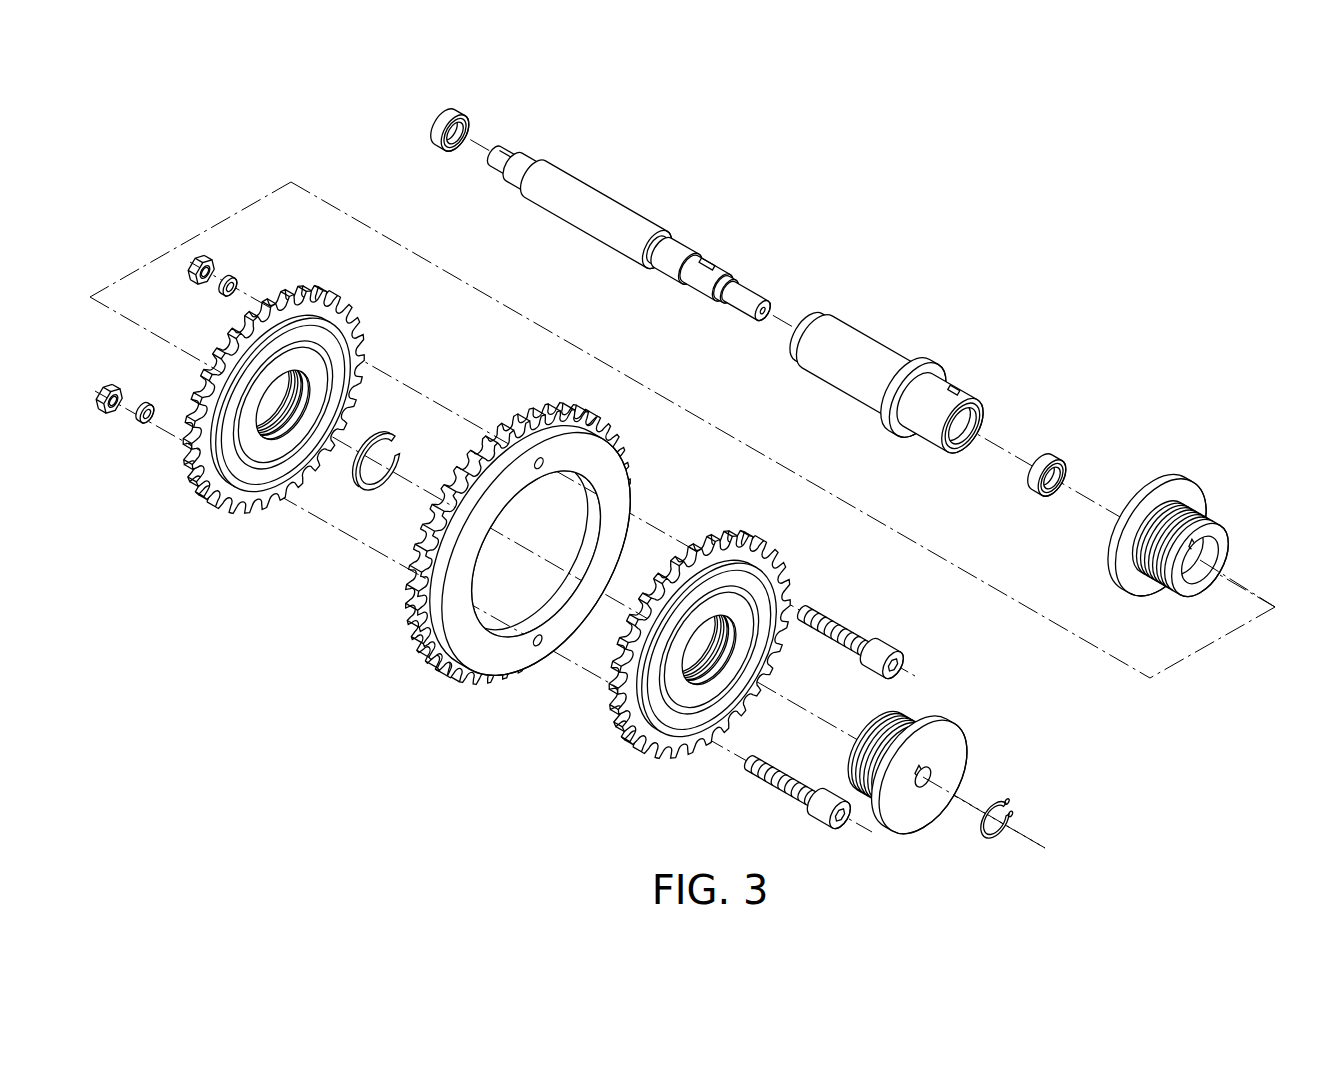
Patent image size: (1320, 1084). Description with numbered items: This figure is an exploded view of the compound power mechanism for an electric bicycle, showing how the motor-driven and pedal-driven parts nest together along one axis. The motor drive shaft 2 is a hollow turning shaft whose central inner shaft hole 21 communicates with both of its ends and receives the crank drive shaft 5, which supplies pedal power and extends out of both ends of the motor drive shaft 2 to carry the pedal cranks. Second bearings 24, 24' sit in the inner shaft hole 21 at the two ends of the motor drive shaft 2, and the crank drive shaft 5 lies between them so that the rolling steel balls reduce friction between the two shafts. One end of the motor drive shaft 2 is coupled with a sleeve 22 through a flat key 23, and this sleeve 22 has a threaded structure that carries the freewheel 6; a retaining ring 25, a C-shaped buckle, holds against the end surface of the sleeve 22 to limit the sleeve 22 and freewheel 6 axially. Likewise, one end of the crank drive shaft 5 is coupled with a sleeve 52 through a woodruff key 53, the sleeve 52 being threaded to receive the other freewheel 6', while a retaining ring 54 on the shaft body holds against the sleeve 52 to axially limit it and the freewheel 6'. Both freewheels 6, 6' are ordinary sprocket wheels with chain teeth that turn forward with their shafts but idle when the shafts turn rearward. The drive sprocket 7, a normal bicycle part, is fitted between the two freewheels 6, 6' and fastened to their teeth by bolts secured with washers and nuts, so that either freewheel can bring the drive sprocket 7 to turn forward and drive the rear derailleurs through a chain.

The motor drive shaft 2 is at (845, 318).
The crank drive shaft 5 is at (628, 215).
The freewheel 6 is at (273, 423).
The freewheel 6' is at (674, 650).
The drive sprocket 7 is at (414, 598).
The inner shaft hole 21 is at (972, 420).
The sleeve 22 is at (1212, 513).
The flat key 23 is at (948, 392).
The second bearing 24 is at (409, 130).
The second bearing 24' is at (1073, 455).
The retaining ring 25 is at (384, 432).
The sleeve 52 is at (950, 722).
The woodruff key 53 is at (716, 268).
The retaining ring 54 is at (1006, 833).